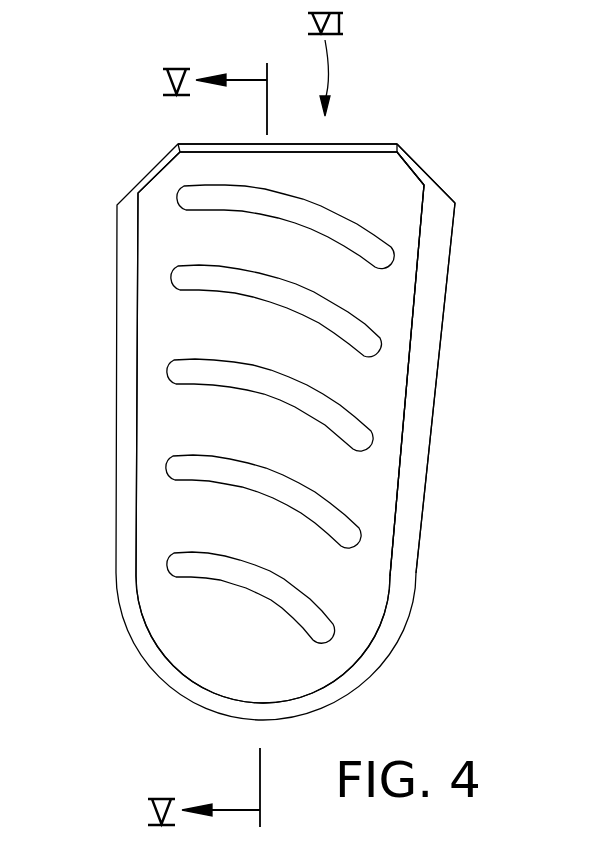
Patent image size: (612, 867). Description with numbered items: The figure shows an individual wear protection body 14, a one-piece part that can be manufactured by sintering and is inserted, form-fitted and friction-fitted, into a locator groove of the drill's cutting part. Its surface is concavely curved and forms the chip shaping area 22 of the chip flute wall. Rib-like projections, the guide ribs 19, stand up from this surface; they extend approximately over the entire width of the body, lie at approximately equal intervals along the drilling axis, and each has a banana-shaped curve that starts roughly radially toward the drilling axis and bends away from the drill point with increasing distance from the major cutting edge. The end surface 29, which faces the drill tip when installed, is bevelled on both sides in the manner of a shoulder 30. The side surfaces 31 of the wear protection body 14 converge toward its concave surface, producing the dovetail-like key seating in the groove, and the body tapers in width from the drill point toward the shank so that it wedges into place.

The wear protection body 14 is at (384, 393).
The guide ribs 19 is at (373, 345).
The chip shaping area 22 is at (235, 425).
The end surface 29 is at (378, 145).
The shoulder 30 is at (418, 165).
The side surfaces 31 is at (413, 512).